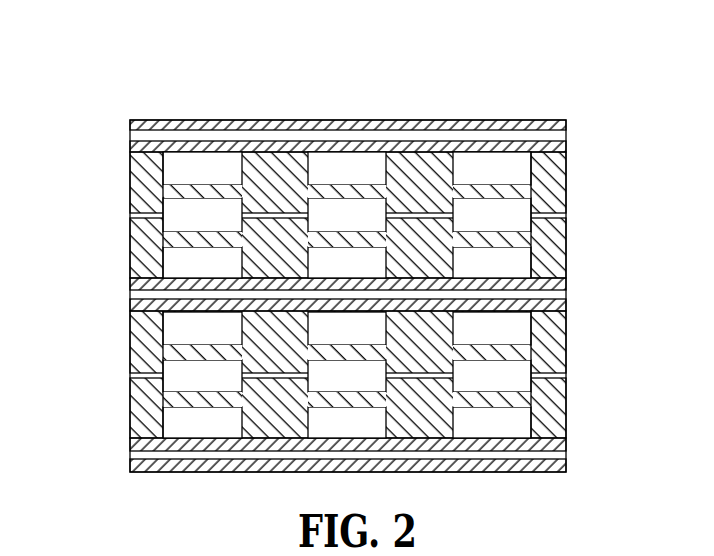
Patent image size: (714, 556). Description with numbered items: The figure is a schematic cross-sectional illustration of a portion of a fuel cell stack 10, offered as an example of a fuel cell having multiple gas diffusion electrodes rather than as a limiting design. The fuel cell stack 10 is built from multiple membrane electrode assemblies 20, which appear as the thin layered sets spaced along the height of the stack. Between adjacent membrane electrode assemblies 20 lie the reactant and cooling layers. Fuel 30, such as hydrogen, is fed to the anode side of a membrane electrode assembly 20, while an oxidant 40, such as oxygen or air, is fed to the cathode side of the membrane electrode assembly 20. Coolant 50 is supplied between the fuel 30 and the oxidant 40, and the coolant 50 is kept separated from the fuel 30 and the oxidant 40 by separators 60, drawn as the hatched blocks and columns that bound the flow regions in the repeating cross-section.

The fuel cell stack 10 is at (174, 85).
The membrane electrode assembly 20 is at (578, 120).
The fuel 30 is at (172, 173).
The oxidant 40 is at (178, 265).
The coolant 50 is at (173, 229).
The separator 60 is at (550, 186).